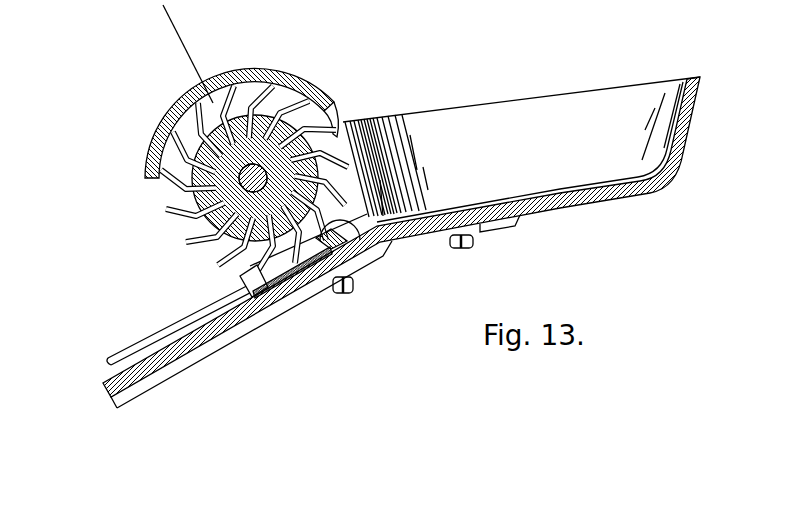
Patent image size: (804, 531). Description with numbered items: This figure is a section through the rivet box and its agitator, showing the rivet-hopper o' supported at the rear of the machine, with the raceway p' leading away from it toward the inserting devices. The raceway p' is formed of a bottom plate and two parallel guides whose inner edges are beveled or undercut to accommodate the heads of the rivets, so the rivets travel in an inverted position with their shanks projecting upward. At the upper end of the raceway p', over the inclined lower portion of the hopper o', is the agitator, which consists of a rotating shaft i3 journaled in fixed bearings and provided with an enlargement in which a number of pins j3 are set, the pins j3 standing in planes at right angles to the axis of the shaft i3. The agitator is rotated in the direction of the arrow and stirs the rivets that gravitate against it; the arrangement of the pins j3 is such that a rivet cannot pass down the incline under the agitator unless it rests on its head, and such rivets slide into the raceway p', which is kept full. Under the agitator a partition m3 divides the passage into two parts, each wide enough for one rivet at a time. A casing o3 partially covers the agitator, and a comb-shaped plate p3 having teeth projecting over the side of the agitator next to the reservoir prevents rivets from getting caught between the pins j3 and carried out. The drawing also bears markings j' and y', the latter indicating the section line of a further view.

The rivet-hopper o' is at (401, 242).
The casing o3 is at (297, 58).
The comb-shaped plate p3 is at (331, 96).
The rotating shaft i3 is at (178, 195).
The pins j3 is at (216, 240).
The raceway p' is at (173, 321).
The partition m3 is at (262, 284).
The deflector piece j' is at (340, 221).
The shaft / pivot y' is at (256, 194).